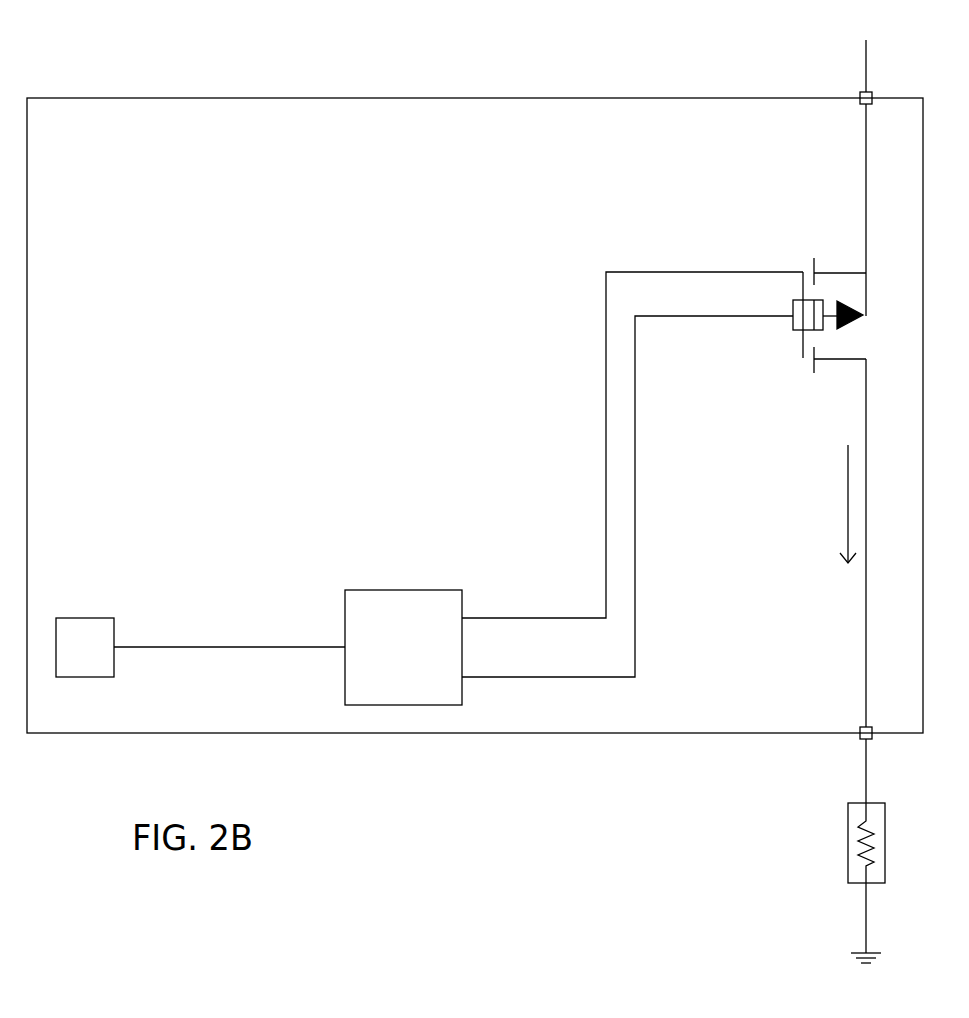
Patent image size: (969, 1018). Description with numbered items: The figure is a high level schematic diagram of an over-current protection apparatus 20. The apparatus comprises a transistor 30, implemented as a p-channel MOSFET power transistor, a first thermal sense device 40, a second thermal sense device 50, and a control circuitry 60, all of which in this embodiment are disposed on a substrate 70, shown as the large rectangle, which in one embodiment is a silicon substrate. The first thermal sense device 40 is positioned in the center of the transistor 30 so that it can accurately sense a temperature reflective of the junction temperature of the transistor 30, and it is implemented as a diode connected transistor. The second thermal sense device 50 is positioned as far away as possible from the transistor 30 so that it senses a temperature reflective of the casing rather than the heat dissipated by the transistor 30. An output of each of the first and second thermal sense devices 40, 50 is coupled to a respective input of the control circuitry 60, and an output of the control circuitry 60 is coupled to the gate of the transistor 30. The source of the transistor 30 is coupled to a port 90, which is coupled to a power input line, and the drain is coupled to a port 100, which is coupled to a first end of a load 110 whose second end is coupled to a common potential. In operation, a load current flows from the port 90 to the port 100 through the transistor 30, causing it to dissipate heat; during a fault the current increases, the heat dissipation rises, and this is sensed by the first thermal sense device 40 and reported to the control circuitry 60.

The over-current protection apparatus 20 is at (304, 51).
The transistor 30 is at (838, 325).
The first thermal sense device 40 is at (793, 323).
The second thermal sense device 50 is at (86, 618).
The control circuitry 60 is at (345, 618).
The substrate 70 is at (548, 98).
The port 90 is at (861, 104).
The port 100 is at (861, 727).
The load 110 is at (848, 853).